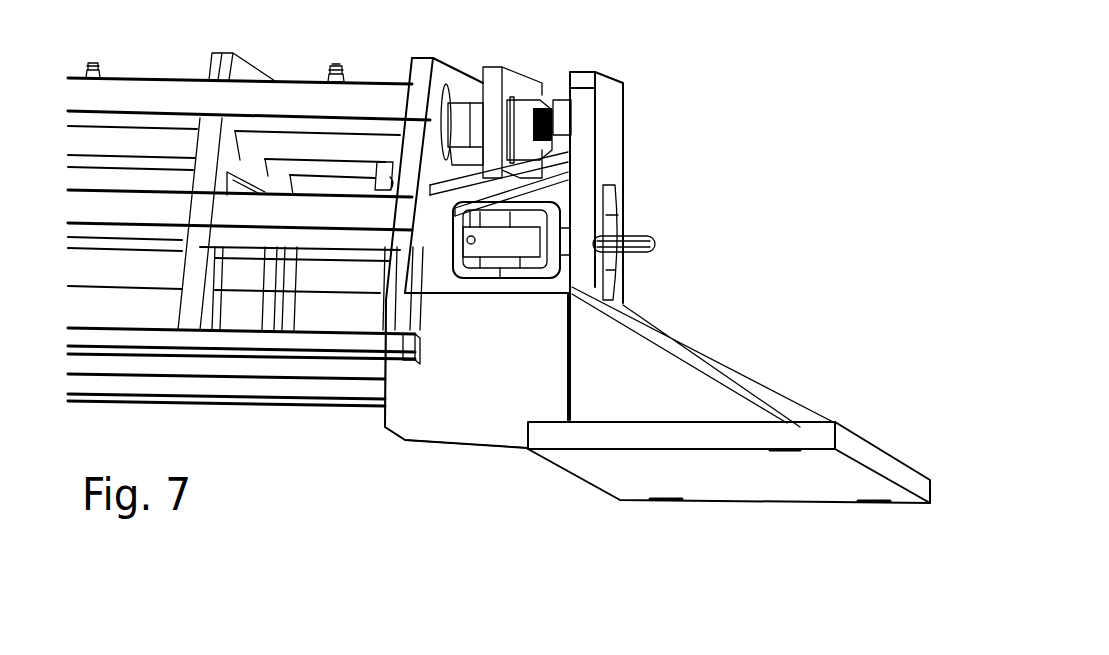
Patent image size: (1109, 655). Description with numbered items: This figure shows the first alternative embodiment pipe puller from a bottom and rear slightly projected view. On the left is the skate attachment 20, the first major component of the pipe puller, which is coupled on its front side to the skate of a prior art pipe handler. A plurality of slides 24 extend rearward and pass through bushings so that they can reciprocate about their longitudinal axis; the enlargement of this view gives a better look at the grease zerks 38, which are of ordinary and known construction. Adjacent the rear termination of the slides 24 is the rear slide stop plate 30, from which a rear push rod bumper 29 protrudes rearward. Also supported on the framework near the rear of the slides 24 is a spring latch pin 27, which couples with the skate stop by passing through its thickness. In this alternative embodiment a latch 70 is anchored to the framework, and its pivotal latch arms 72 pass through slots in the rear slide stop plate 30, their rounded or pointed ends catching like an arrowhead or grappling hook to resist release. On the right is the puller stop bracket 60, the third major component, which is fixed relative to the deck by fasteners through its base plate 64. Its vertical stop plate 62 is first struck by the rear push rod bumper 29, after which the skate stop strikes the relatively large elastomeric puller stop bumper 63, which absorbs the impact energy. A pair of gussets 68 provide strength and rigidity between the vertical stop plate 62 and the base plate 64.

The skate attachment 20 is at (185, 68).
The grease zerks 38 is at (335, 62).
The slides 24 is at (473, 110).
The rear slide stop plate 30 is at (497, 63).
The rear push rod bumper 29 is at (560, 103).
The vertical stop plate 62 is at (613, 93).
The pivotal latch arms 72 is at (540, 183).
The latch 70 is at (370, 185).
The spring latch pin 27 is at (659, 247).
The puller stop bumper 63 is at (408, 418).
The gussets 68 is at (663, 372).
The puller stop bracket 60 is at (745, 383).
The base plate 64 is at (853, 447).